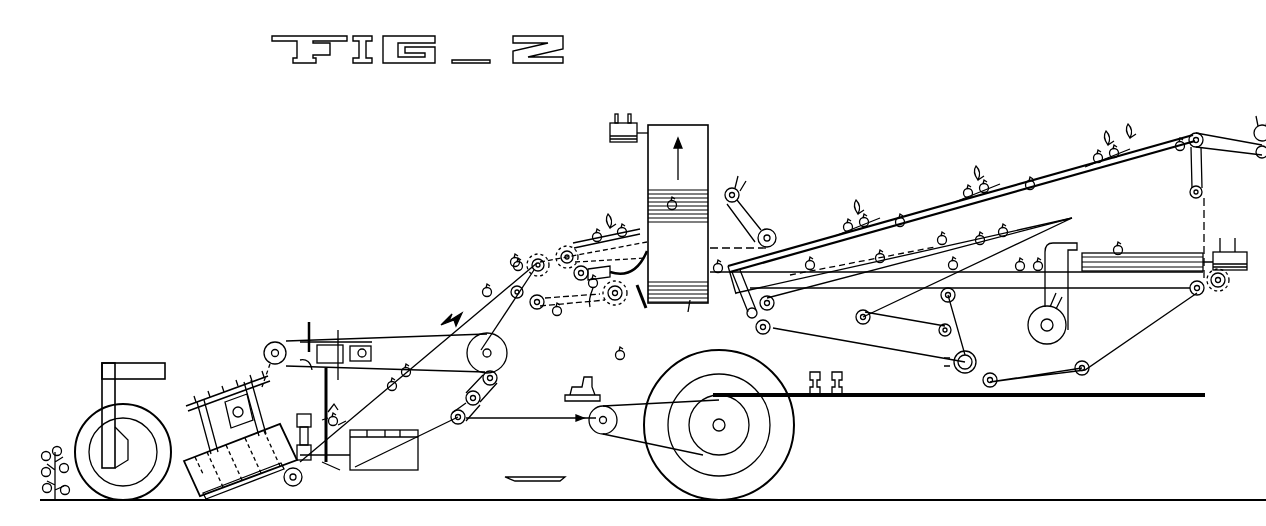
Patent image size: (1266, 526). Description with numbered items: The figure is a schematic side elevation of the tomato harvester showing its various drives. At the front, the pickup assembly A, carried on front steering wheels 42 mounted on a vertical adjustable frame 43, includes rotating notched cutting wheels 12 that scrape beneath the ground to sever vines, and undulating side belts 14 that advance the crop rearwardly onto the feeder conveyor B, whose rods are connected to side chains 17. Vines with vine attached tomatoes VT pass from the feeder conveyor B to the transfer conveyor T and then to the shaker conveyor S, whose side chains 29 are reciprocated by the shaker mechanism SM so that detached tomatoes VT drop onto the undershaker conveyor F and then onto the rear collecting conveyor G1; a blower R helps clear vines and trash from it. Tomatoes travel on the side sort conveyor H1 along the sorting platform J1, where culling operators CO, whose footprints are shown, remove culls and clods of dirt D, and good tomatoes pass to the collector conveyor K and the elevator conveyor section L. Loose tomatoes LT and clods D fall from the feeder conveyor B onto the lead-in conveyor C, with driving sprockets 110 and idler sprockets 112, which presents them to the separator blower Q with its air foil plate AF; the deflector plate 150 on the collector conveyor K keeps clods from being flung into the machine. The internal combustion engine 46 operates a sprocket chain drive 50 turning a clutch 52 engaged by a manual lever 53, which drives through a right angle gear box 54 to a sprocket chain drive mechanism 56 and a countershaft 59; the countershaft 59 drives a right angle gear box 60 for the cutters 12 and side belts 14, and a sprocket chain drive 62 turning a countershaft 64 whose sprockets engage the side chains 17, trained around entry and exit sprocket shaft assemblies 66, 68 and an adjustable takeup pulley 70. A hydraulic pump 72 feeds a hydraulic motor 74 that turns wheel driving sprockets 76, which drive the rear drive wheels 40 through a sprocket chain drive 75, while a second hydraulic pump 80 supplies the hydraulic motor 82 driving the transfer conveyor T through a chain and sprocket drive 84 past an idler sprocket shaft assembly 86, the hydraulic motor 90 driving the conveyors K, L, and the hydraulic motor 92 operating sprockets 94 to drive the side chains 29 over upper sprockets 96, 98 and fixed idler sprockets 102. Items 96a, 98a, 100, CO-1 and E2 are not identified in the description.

The notched cutting wheels 12 is at (236, 494).
The undulating side belts 14 is at (222, 452).
The side chains 17 is at (470, 428).
The side chains 29 is at (1208, 207).
The rear drive wheels 40 is at (791, 448).
The front steering wheels 42 is at (90, 420).
The vertical adjustable frame 43 is at (102, 388).
The internal combustion engine 46 is at (418, 453).
The sprocket chain drive 50 is at (324, 393).
The clutch 52 is at (320, 346).
The manual lever 53 is at (306, 324).
The right angle gear box 54 is at (368, 346).
The sprocket chain drive mechanism 56 is at (306, 358).
The countershaft 59 is at (268, 352).
The right angle gear box 60 is at (222, 421).
The sprocket chain drive 62 is at (468, 388).
The countershaft 64 is at (495, 353).
The entry sprocket shaft assembly 66 is at (292, 487).
The exit sprocket shaft assembly 68 is at (534, 258).
The adjustable takeup pulley 70 is at (482, 400).
The hydraulic pump 72 is at (302, 470).
The hydraulic motor 74 is at (298, 420).
The sprocket chain drive 75 is at (610, 440).
The wheel driving sprockets 76 is at (596, 432).
The second hydraulic pump 80 is at (335, 465).
The hydraulic motor 82 is at (742, 196).
The chain and sprocket drive 84 is at (750, 208).
The idler sprocket shaft assembly 86 is at (562, 250).
The hydraulic motor 90 is at (610, 134).
The hydraulic motor 92 is at (955, 370).
The sprockets 94 is at (980, 352).
The upper sprocket 96 is at (744, 304).
The pivot 96a is at (754, 327).
The upper sprocket 98 is at (1212, 158).
The frame member 98a is at (1190, 176).
The pulley 100 is at (1212, 130).
The fixed idler sprockets 102 is at (772, 327).
The driving sprockets 110 is at (622, 302).
The idler sprockets 112 is at (538, 310).
The deflector plate 150 is at (650, 310).
The pickup assembly A is at (226, 497).
The feeder conveyor B is at (415, 346).
The lead-in conveyor C is at (556, 306).
The clods of dirt D is at (510, 262).
The undershaker conveyor F is at (1000, 238).
The collector conveyor K is at (694, 304).
The elevator conveyor section L is at (646, 160).
The separator blower Q is at (610, 260).
The blower R is at (1068, 328).
The shaker conveyor S is at (1030, 184).
The transfer conveyor T is at (645, 243).
The vine attached tomatoes VT is at (348, 418).
The loose tomatoes LT is at (484, 290).
The air foil plate AF is at (646, 258).
The culling operators CO is at (808, 374).
The shoe CO-1 is at (596, 386).
The elevator E2 is at (584, 404).
The rear collecting conveyor G1 is at (1152, 253).
The side sort conveyor H1 is at (1148, 292).
The sorting platform J1 is at (1090, 400).
The shaker mechanism SM is at (1252, 115).